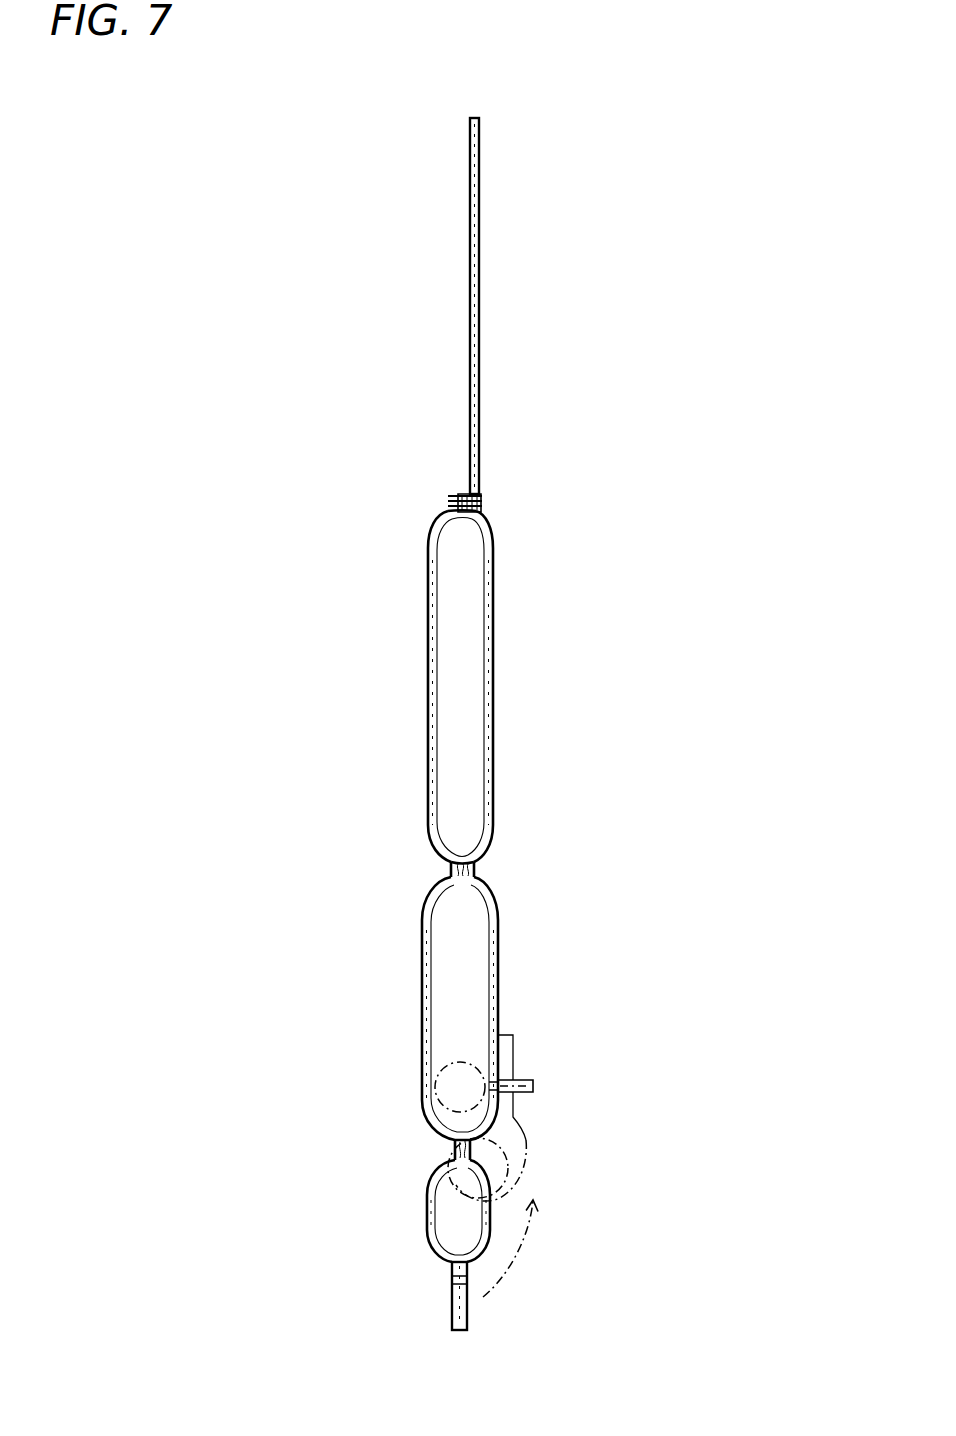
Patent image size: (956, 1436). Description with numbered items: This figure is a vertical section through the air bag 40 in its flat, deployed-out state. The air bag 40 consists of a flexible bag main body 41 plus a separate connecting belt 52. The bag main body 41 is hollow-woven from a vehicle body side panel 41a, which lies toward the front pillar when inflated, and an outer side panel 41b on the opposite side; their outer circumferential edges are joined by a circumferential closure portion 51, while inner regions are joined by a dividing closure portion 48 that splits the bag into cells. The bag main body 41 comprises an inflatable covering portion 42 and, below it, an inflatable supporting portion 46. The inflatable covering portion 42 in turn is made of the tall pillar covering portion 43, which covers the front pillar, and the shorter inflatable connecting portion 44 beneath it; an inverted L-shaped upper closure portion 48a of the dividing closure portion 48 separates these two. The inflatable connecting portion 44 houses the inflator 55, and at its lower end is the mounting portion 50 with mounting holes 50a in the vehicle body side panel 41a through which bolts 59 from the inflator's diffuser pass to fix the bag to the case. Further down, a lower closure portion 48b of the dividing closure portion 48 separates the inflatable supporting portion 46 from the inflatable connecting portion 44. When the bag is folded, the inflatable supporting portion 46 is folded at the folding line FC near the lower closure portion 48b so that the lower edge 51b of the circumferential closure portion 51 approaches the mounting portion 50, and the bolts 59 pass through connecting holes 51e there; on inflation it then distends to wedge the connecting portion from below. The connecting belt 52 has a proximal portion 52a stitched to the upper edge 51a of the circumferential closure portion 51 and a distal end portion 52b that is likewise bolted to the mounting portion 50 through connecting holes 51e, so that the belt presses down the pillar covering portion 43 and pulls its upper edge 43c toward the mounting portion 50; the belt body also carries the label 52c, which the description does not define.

The air bag 40 is at (265, 320).
The bag main body 41 is at (400, 518).
The vehicle body side panel 41a is at (490, 620).
The outer side panel 41b is at (430, 585).
The inflatable covering portion 42 is at (265, 755).
The pillar covering portion 43 is at (398, 758).
The upper edge 43c is at (500, 522).
The inflatable connecting portion 44 is at (400, 948).
The inflatable supporting portion 46 is at (415, 1198).
The dividing closure portion 48 is at (475, 867).
The upper closure portion 48a is at (462, 869).
The lower closure portion 48b is at (470, 1150).
The mounting portion 50 is at (500, 1082).
The mounting holes 50a is at (505, 1090).
The circumferential closure portion 51 is at (463, 493).
The upper edge 51a is at (465, 503).
The lower edge 51b is at (503, 1043).
The connecting holes 51e is at (455, 1280).
The connecting belt 52 is at (398, 327).
The proximal portion 52a is at (480, 483).
The distal end portion 52b is at (480, 127).
The tube body 52c is at (470, 140).
The inflator 55 is at (445, 1085).
The bolts 59 is at (540, 1085).
The folding line FC is at (430, 1152).